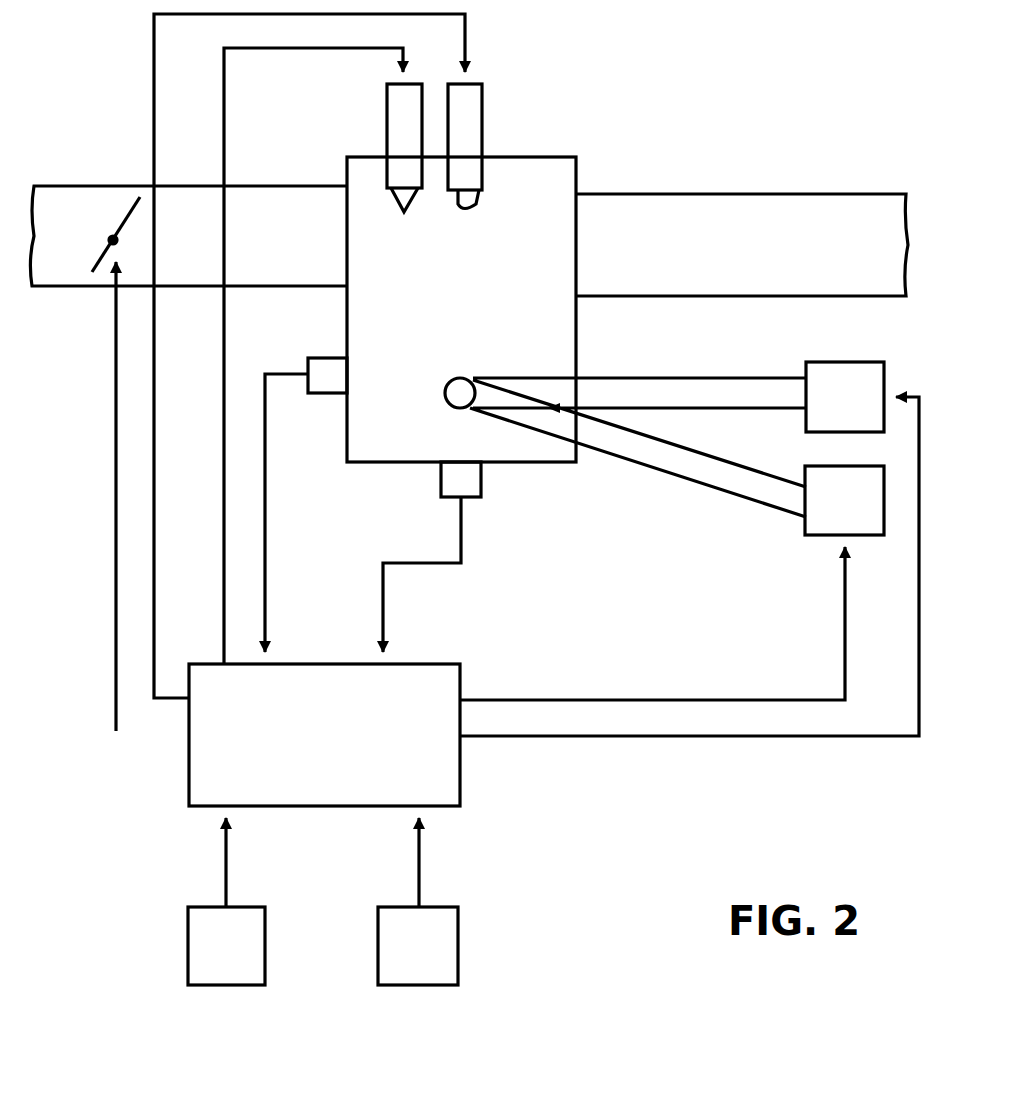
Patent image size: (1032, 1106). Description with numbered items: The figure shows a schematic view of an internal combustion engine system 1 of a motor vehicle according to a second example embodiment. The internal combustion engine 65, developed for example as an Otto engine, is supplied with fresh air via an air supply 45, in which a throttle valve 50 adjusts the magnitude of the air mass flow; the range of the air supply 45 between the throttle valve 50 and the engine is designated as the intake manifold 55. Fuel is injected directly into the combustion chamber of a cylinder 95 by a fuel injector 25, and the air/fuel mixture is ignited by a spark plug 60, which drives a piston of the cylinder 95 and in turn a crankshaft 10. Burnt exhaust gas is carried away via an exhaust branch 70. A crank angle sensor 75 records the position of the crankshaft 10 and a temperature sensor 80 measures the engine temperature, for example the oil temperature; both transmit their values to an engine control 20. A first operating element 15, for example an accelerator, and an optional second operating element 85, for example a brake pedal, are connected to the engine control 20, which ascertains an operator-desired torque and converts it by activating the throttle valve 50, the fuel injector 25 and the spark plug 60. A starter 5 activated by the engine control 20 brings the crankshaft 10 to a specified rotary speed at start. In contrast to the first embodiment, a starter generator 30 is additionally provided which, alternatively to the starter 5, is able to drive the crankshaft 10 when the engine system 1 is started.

The internal combustion engine system 1 is at (652, 100).
The starter 5 is at (826, 362).
The crankshaft 10 is at (455, 378).
The first operating element 15 is at (221, 985).
The engine control 20 is at (448, 786).
The fuel injector 25 is at (387, 207).
The starter generator 30 is at (821, 535).
The air supply 45 is at (90, 160).
The throttle valve 50 is at (100, 262).
The intake manifold 55 is at (286, 205).
The spark plug 60 is at (472, 122).
The internal combustion engine 65 is at (545, 482).
The exhaust branch 70 is at (796, 212).
The crank angle sensor 75 is at (326, 393).
The temperature sensor 80 is at (443, 483).
The second operating element 85 is at (425, 985).
The cylinder 95 is at (560, 240).